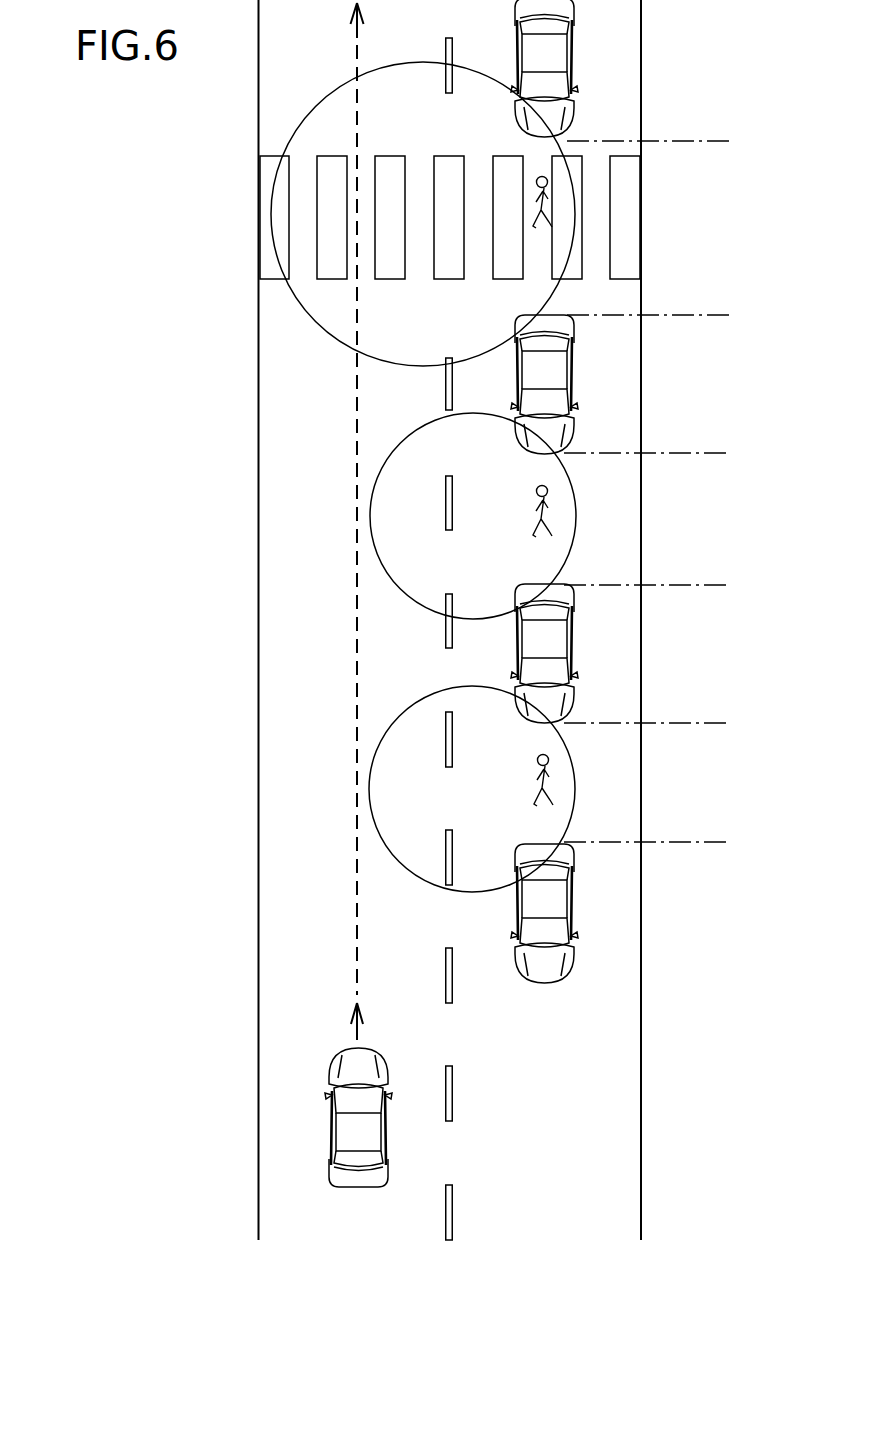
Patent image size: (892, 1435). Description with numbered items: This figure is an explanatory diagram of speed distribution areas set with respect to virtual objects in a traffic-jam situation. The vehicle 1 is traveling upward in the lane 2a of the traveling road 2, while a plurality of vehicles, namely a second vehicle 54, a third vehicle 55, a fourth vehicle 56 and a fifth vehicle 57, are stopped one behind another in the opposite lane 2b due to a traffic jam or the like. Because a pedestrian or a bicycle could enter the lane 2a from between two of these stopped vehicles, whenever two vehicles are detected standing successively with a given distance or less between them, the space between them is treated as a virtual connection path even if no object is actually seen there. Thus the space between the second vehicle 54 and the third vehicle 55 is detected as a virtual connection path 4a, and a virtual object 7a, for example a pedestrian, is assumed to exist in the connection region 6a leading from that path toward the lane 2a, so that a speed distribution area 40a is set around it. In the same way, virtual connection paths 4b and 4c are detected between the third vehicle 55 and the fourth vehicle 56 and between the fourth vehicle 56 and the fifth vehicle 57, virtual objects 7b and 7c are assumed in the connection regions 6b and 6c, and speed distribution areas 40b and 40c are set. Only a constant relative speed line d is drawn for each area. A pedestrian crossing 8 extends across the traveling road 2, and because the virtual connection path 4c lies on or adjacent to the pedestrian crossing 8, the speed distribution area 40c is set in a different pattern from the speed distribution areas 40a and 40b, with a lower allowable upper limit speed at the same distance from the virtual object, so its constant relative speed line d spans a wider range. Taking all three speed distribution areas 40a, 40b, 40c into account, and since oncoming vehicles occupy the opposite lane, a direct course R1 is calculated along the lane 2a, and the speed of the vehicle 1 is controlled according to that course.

The vehicle 1 is at (330, 1133).
The traveling road 2 is at (641, 1255).
The lane 2a is at (361, 1217).
The opposite lane 2b is at (546, 1217).
The virtual connection path 4a is at (730, 723).
The virtual connection path 4b is at (730, 453).
The virtual connection path 4c is at (730, 141).
The connection region 6a is at (542, 822).
The connection region 6b is at (540, 552).
The connection region 6c is at (542, 242).
The virtual object 7a is at (550, 763).
The virtual object 7b is at (549, 493).
The virtual object 7c is at (549, 185).
The pedestrian crossing 8 is at (270, 167).
The speed distribution area 40a is at (410, 872).
The speed distribution area 40b is at (410, 602).
The speed distribution area 40c is at (420, 62).
The second vehicle 54 is at (575, 900).
The third vehicle 55 is at (575, 642).
The fourth vehicle 56 is at (575, 373).
The fifth vehicle 57 is at (575, 60).
The direct course R1 is at (355, 43).
The constant relative speed line d is at (317, 107).